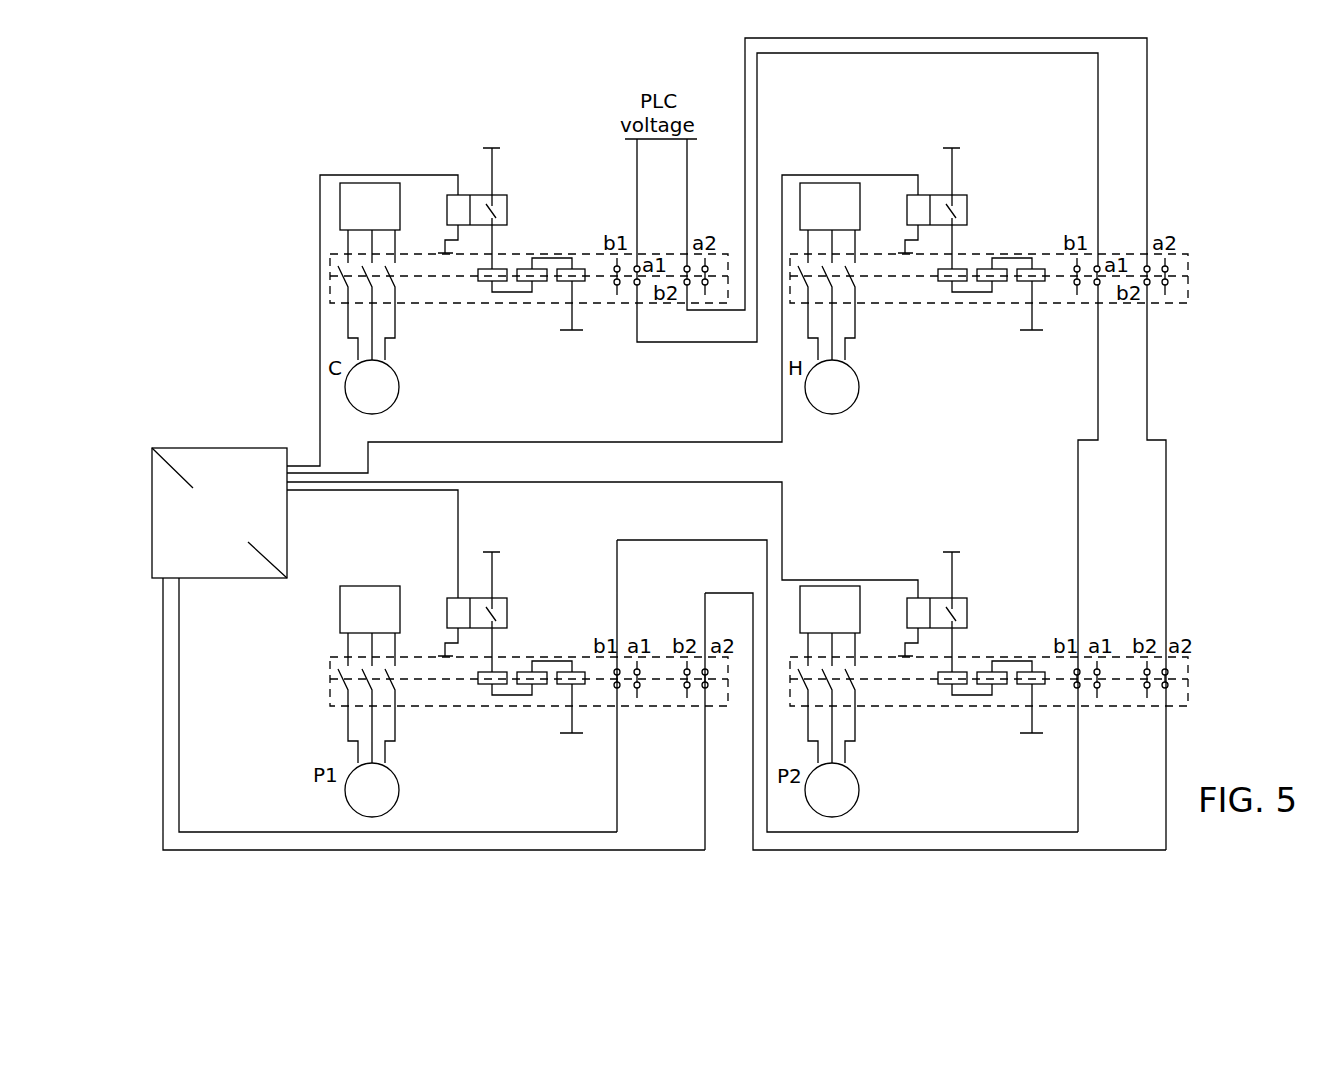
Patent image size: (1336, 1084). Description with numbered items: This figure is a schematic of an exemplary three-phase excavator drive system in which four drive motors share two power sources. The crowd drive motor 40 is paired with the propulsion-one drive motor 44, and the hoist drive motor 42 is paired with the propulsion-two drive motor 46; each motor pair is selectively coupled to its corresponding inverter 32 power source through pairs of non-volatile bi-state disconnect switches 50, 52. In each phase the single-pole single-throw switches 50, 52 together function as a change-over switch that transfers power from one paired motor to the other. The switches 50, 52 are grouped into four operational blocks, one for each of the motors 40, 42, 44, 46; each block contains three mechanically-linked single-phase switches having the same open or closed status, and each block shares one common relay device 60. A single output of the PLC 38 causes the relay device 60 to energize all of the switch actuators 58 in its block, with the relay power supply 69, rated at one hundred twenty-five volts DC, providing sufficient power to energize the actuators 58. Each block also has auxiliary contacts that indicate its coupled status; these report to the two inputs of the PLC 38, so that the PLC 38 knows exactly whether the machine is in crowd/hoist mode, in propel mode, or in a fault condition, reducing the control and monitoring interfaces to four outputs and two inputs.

The inverter 32 is at (359, 223).
The PLC 38 is at (177, 448).
The drive motor 40 is at (399, 389).
The drive motor 42 is at (861, 387).
The drive motor 44 is at (401, 790).
The drive motor 46 is at (861, 790).
The bi-state disconnect switch 50 is at (543, 316).
The bi-state disconnect switch 52 is at (759, 723).
The actuator 58 is at (560, 281).
The relay device 60 is at (503, 197).
The relay power supply 69 is at (492, 124).